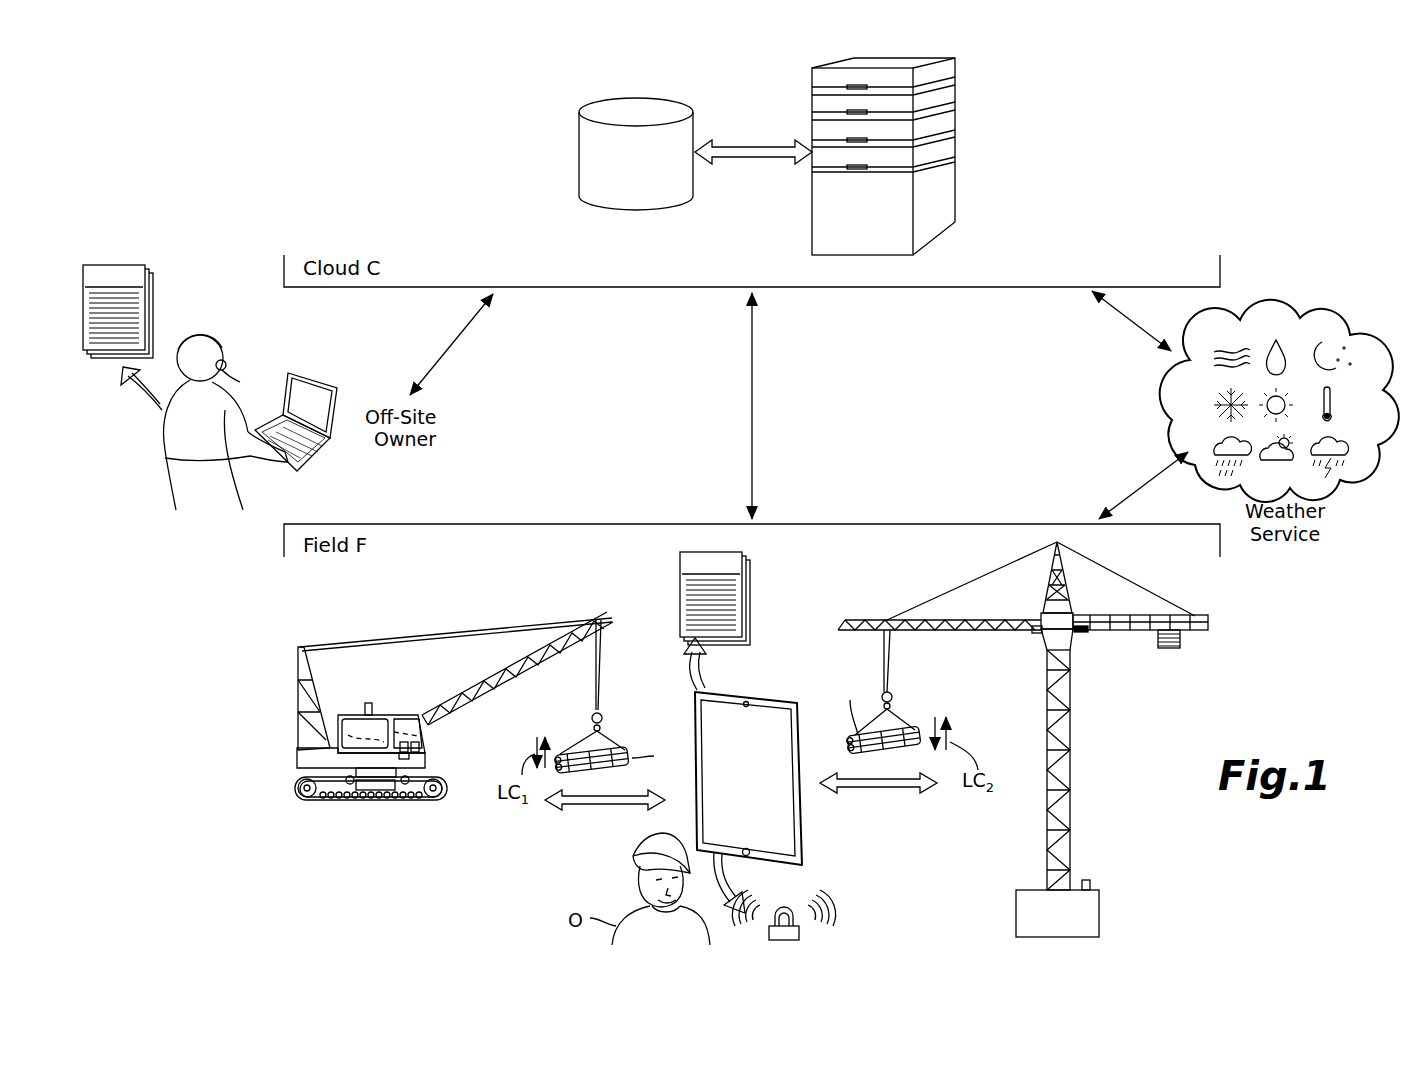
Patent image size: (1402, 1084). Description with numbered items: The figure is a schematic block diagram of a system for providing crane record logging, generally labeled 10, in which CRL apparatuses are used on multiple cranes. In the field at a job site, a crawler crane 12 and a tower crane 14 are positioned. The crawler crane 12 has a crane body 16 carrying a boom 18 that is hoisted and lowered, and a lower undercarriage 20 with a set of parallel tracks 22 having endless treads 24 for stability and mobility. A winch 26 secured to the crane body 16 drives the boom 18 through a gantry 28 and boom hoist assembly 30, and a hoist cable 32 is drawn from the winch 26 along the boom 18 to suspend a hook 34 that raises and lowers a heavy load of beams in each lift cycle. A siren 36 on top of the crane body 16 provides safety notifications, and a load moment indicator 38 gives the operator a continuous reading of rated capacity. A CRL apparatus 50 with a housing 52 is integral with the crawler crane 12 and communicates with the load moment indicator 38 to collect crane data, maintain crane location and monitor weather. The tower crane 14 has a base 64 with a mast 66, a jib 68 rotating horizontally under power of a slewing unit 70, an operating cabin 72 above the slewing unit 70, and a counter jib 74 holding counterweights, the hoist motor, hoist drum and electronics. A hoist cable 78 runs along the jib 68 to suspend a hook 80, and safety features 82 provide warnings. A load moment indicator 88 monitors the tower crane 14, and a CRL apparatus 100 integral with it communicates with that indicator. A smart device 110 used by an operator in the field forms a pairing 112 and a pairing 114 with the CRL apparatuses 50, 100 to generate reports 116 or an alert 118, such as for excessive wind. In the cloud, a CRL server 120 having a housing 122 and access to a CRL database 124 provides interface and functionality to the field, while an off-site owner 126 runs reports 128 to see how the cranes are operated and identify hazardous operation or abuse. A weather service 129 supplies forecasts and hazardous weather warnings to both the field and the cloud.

The system for providing CRL 10 is at (1117, 150).
The crawler crane 12 is at (432, 626).
The tower crane 14 is at (1072, 752).
The crane body 16 is at (424, 741).
The boom 18 is at (505, 690).
The lower undercarriage 20 is at (369, 814).
The parallel tracks 22 is at (355, 800).
The endless treads 24 is at (445, 797).
The winch 26 is at (340, 715).
The gantry 28 is at (298, 680).
The boom hoist assembly 30 is at (378, 640).
The hoist cable 32 is at (600, 670).
The hook 34 is at (602, 728).
The siren 36 is at (367, 703).
The load moment indicator 38 is at (420, 750).
The CRL apparatus 50 is at (403, 760).
The housing 52 is at (404, 740).
The base 64 is at (1100, 915).
The mast 66 is at (1072, 808).
The jib 68 is at (985, 632).
The slewing unit 70 is at (1075, 640).
The operating cabin 72 is at (1082, 608).
The counter jib 74 is at (1188, 632).
The hoist cable 78 is at (992, 572).
The hook 80 is at (893, 706).
The safety features 82 is at (1088, 880).
The load moment indicator 88 is at (1040, 633).
The CRL apparatus 100 is at (1088, 628).
The smart device 110 is at (773, 697).
The pairing 112 is at (600, 806).
The pairing 114 is at (875, 793).
The reports 116 is at (750, 598).
The alert 118 is at (800, 932).
The CRL server 120 is at (921, 161).
The housing 122 is at (940, 235).
The CRL database 124 is at (581, 156).
The off-site owner 126 is at (315, 375).
The reports 128 is at (147, 300).
The weather service 129 is at (1170, 405).